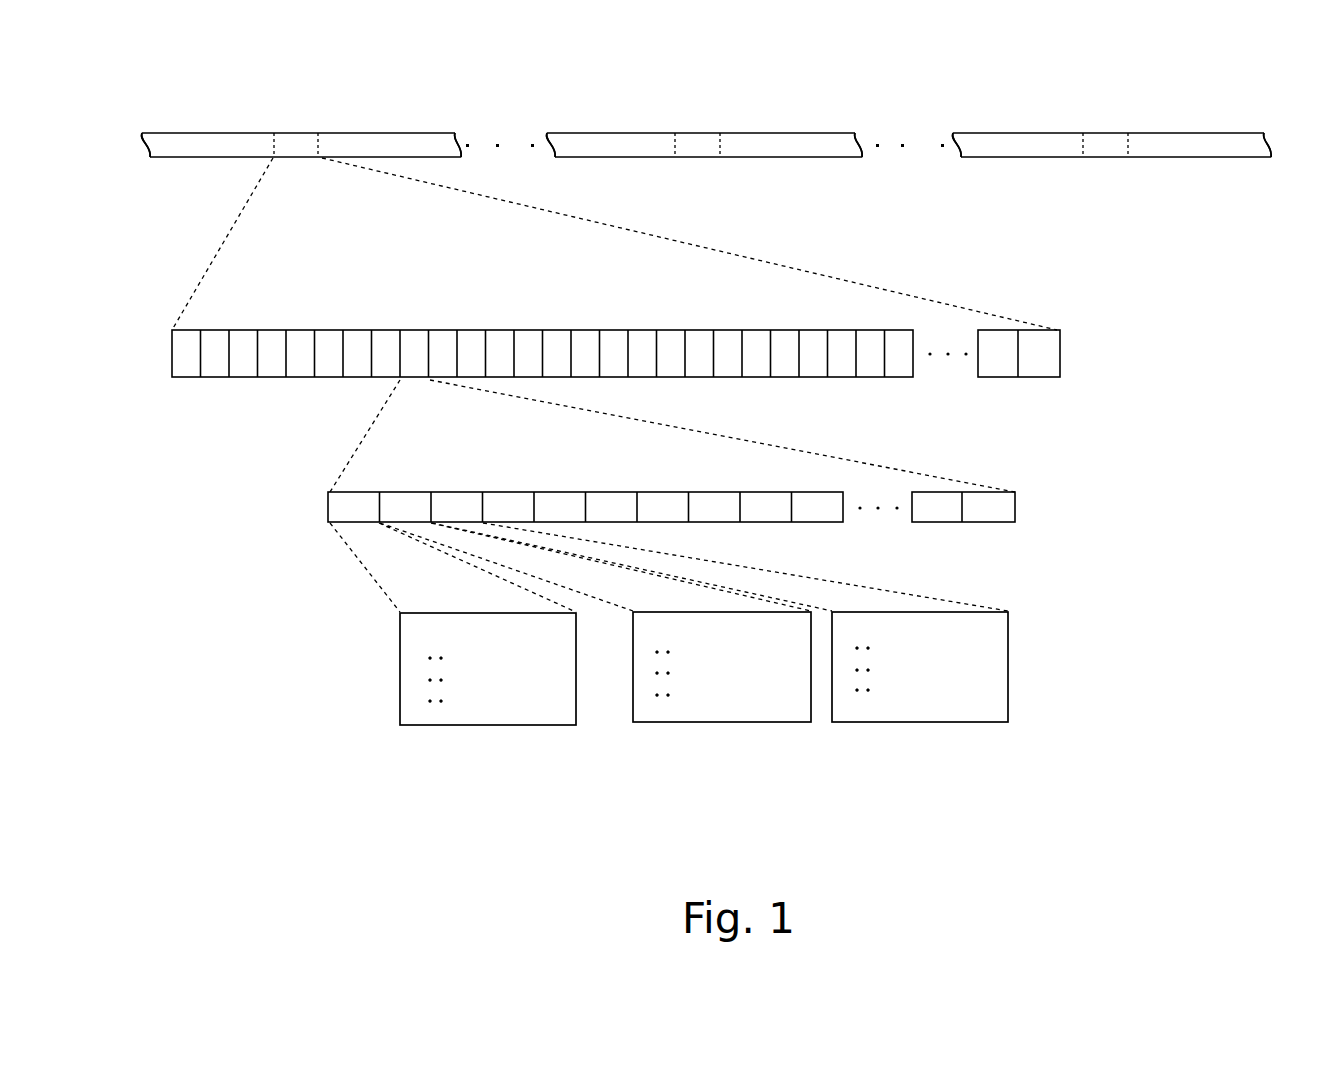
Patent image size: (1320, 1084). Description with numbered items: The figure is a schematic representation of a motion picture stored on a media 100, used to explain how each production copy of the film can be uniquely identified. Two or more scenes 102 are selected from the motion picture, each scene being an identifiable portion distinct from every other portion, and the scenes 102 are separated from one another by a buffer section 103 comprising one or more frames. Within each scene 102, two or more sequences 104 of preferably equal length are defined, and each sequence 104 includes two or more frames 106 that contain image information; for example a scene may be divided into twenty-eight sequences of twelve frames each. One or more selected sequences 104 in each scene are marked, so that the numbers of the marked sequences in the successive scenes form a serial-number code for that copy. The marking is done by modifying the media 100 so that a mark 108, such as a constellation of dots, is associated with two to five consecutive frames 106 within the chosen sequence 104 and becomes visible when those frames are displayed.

The media 100 is at (378, 133).
The scene 102 is at (296, 133).
The buffer section 103 is at (433, 133).
The sequence 104 is at (194, 330).
The frame 106 is at (357, 492).
The mark 108 is at (413, 683).